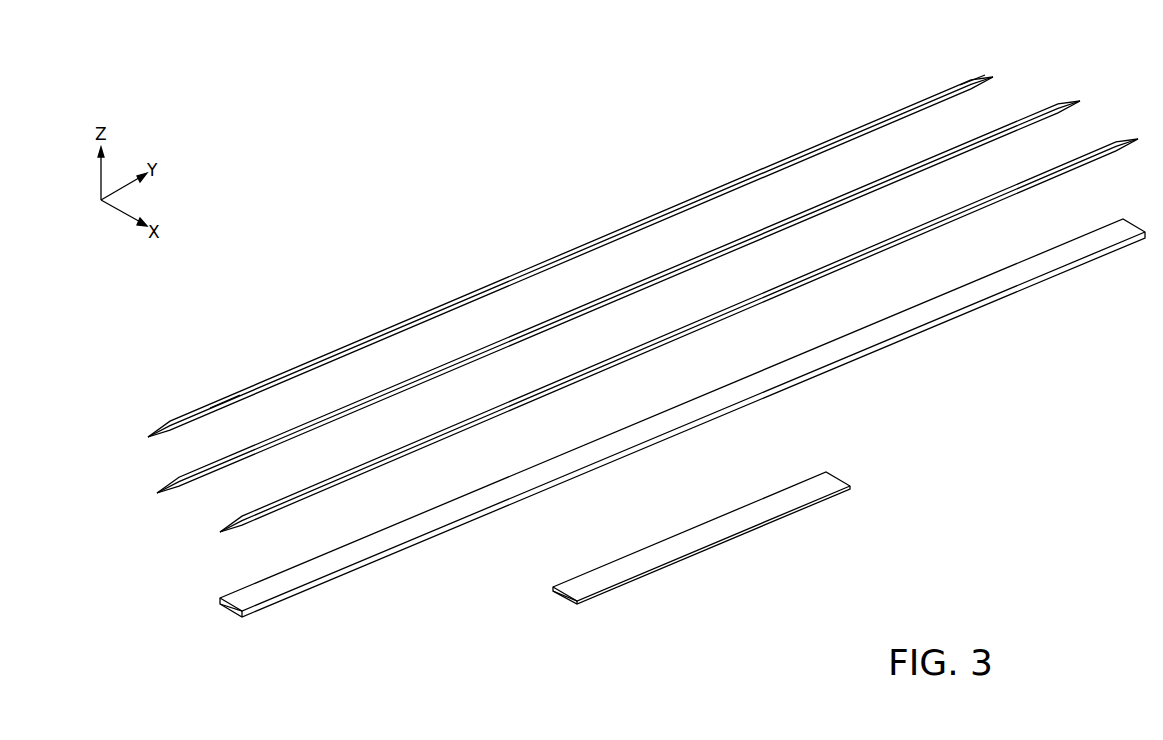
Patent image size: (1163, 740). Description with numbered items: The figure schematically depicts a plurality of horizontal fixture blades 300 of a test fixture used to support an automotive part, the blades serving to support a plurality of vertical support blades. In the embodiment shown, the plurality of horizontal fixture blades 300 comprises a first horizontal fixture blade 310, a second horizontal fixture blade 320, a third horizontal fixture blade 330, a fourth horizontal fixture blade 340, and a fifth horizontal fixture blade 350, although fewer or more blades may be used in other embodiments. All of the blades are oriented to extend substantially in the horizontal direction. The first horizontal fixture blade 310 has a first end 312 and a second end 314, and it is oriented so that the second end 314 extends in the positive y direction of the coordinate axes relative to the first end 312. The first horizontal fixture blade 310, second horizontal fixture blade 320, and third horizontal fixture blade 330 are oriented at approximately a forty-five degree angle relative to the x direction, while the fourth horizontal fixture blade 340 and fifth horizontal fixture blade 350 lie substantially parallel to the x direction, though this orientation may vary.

The plurality of horizontal fixture blades 300 is at (595, 188).
The first horizontal fixture blade 310 is at (148, 437).
The first end 312 is at (222, 402).
The second end 314 is at (976, 82).
The second horizontal fixture blade 320 is at (157, 493).
The third horizontal fixture blade 330 is at (220, 532).
The fourth horizontal fixture blade 340 is at (233, 617).
The fifth horizontal fixture blade 350 is at (567, 604).